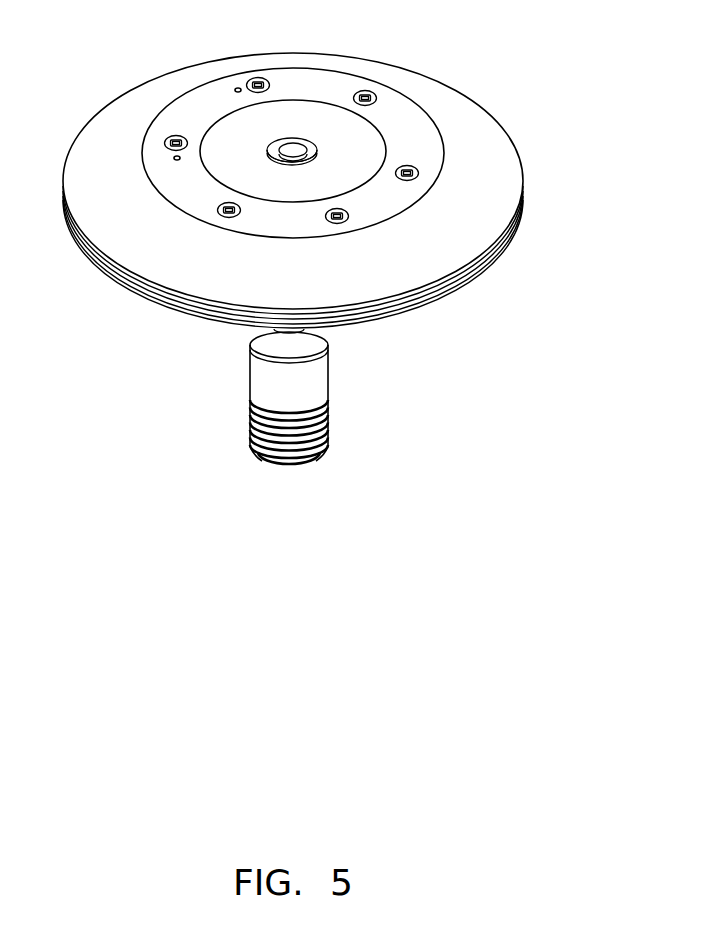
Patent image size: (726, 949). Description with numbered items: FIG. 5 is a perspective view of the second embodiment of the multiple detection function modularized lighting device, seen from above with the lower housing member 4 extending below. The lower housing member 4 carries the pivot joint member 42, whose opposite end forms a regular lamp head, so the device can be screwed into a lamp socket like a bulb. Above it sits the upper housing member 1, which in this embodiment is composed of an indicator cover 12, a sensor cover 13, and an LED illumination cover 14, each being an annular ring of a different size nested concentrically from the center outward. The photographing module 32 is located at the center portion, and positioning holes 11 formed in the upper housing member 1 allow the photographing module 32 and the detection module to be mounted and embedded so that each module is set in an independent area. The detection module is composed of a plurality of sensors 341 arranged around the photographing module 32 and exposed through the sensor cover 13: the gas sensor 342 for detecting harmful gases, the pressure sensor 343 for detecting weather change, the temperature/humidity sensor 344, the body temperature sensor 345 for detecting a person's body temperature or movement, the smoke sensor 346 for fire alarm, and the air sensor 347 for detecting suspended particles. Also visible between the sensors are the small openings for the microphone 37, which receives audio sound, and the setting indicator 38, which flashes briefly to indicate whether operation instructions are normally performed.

The upper housing member 1 is at (100, 118).
The lower housing member 4 is at (343, 345).
The positioning holes 11 is at (168, 140).
The indicator cover 12 is at (358, 128).
The sensor cover 13 is at (405, 130).
The LED illumination cover 14 is at (490, 163).
The photographing module 32 is at (291, 140).
The microphone 37 is at (170, 160).
The setting indicator 38 is at (236, 88).
The pivot joint member 42 is at (258, 393).
The sensors 341 is at (426, 188).
The gas sensor 342 is at (167, 145).
The pressure sensor 343 is at (253, 77).
The temperature/humidity sensor 344 is at (363, 90).
The body temperature sensor 345 is at (415, 171).
The smoke sensor 346 is at (345, 220).
The air sensor 347 is at (218, 209).